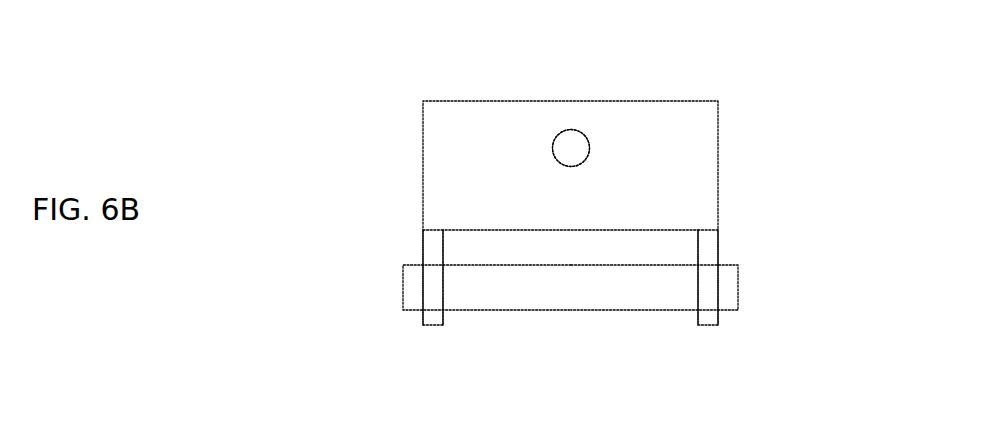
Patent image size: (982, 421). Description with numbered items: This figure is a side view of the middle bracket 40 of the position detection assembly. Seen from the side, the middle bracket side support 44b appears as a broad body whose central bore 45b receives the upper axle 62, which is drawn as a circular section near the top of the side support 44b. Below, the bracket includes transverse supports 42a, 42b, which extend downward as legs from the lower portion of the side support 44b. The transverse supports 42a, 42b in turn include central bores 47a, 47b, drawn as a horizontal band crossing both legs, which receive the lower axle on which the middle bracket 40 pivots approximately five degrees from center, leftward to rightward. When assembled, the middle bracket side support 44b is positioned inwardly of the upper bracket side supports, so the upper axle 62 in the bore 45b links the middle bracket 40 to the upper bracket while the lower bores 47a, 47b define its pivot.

The middle bracket 40 is at (262, 190).
The middle bracket side support 44b is at (699, 101).
The upper axle 62 is at (573, 143).
The central bore 45b is at (589, 154).
The central bore 47a is at (437, 290).
The central bore 47b is at (710, 288).
The transverse support 42a is at (440, 325).
The transverse support 42b is at (705, 327).